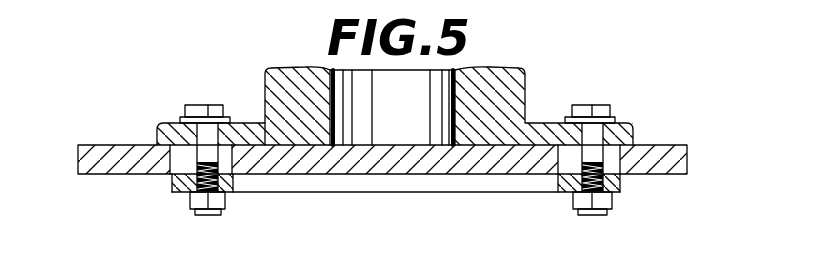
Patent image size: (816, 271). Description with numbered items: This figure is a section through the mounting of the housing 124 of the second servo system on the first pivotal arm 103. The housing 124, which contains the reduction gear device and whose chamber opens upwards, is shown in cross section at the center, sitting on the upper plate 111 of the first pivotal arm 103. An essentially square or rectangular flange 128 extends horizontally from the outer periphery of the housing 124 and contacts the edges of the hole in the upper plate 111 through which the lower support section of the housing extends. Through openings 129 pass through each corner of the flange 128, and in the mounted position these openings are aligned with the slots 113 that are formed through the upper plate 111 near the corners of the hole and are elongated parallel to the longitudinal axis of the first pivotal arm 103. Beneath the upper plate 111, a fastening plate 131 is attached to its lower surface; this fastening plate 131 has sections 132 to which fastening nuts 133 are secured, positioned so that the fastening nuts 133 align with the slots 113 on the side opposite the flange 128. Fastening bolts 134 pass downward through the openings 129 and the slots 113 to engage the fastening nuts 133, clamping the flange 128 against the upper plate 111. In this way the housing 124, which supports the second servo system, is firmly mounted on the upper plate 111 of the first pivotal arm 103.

The first pivotal arm 103 is at (97, 153).
The upper plate 111 is at (685, 160).
The slots 113 is at (178, 175).
The housing 124 is at (513, 88).
The flange 128 is at (164, 126).
The through openings 129 is at (213, 113).
The fastening plate 131 is at (330, 183).
The sections 132 is at (178, 196).
The fastening nuts 133 is at (222, 215).
The fastening bolts 134 is at (191, 105).